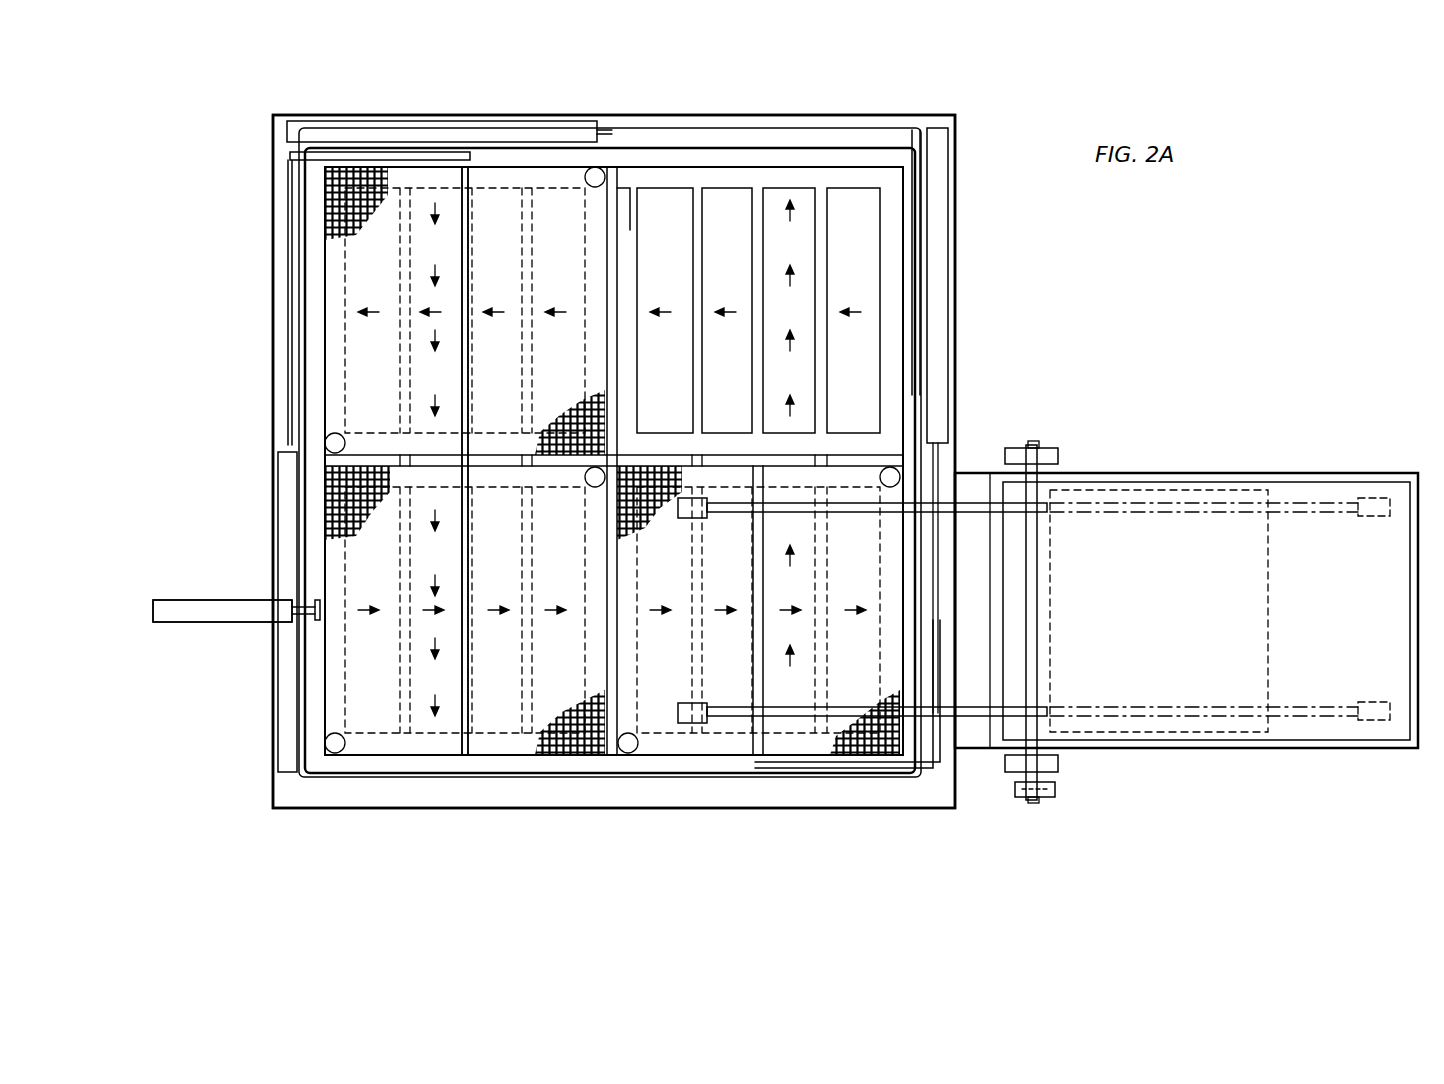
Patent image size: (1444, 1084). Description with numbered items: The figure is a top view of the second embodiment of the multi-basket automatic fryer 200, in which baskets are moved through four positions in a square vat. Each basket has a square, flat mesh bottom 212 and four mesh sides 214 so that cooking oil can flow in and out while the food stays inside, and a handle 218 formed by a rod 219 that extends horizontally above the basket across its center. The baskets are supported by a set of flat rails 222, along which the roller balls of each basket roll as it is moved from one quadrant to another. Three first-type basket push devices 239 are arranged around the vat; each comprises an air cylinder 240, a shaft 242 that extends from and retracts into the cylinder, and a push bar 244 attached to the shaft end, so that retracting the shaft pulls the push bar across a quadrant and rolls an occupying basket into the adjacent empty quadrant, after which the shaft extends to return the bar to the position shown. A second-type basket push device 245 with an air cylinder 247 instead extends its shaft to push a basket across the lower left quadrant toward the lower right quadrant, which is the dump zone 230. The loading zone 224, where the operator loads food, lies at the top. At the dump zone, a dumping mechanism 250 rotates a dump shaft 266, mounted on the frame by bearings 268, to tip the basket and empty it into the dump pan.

The multi-basket automatic fryer 200 is at (1276, 302).
The basket bottom 212 is at (357, 270).
The basket sides 214 is at (315, 325).
The basket handle 218 is at (462, 755).
The rod 219 is at (470, 343).
The flat rails 222 is at (634, 240).
The loading zone 224 is at (769, 60).
The dump zone 230 is at (1186, 610).
The first-type basket push device 239 is at (328, 110).
The air cylinder 240 is at (395, 130).
The shaft 242 is at (655, 127).
The push bar 244 is at (294, 154).
The second-type basket push device 245 is at (192, 597).
The air cylinder 247 is at (184, 628).
The dumping mechanism 250 is at (1086, 772).
The dump shaft 266 is at (1040, 558).
The bearings 268 is at (1050, 447).